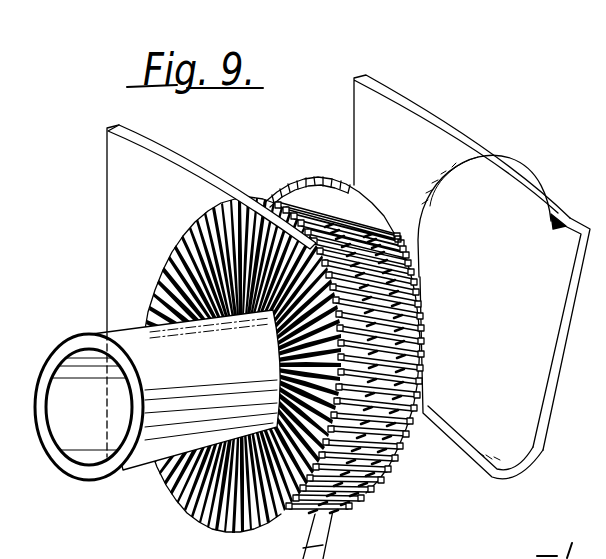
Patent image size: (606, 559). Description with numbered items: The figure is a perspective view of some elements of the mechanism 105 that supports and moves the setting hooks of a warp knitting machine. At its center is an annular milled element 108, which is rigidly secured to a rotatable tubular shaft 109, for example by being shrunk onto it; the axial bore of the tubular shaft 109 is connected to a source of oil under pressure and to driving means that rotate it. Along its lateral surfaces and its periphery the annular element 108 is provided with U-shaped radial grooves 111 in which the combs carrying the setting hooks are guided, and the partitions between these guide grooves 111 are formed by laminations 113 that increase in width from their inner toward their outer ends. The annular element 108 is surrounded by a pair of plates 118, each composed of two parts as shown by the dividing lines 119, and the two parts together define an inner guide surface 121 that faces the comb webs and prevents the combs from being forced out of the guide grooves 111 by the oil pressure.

The mechanism 105 is at (384, 503).
The annular milled element 108 is at (248, 322).
The tubular shaft 109 is at (133, 343).
The radial grooves 111 is at (143, 275).
The laminations 113 is at (167, 223).
The plates 118 is at (472, 277).
The dividing lines 119 is at (551, 223).
The inner guide surface 121 is at (418, 224).